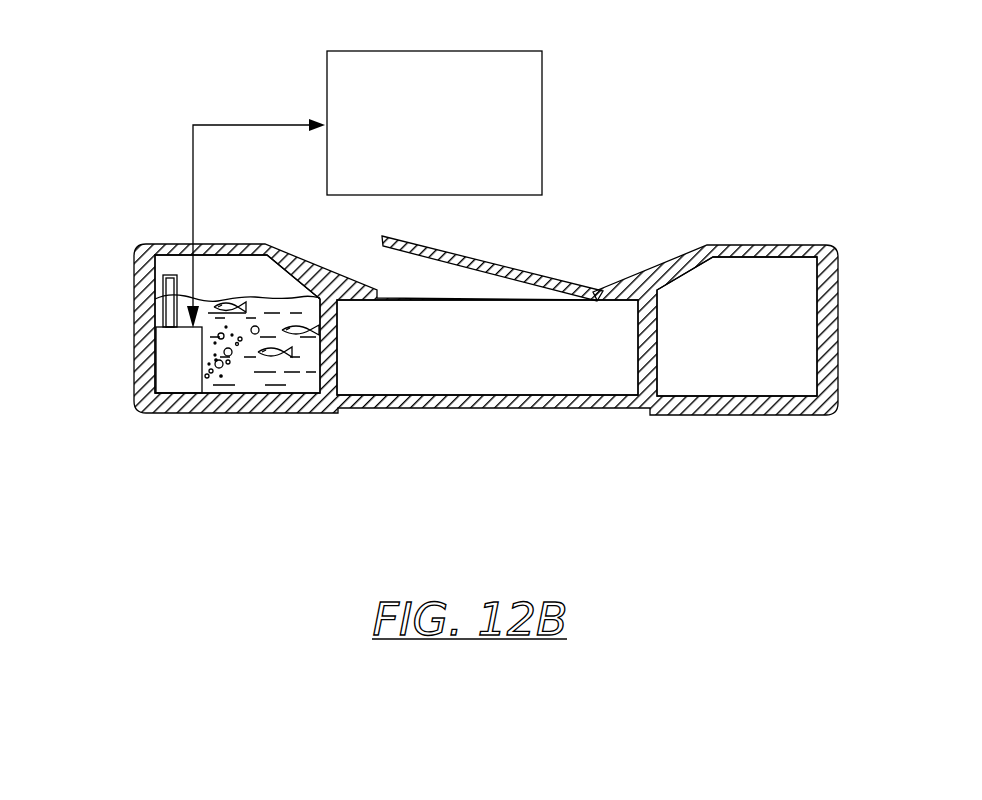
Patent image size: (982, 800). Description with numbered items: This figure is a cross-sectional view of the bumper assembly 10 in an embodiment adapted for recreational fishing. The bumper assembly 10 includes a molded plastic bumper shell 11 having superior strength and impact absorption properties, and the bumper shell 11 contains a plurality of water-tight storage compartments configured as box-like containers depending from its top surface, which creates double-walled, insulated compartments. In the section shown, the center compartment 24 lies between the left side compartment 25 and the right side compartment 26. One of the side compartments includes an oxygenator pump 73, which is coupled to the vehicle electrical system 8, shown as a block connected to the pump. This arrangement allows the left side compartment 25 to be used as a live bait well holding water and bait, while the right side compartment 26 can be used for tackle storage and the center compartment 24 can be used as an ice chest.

The vehicle electrical system 8 is at (407, 50).
The bumper assembly 10 is at (485, 355).
The bumper shell 11 is at (840, 307).
The center compartment 24 is at (442, 377).
The left side compartment 25 is at (775, 292).
The right side compartment 26 is at (178, 262).
The oxygenator pump 73 is at (168, 360).